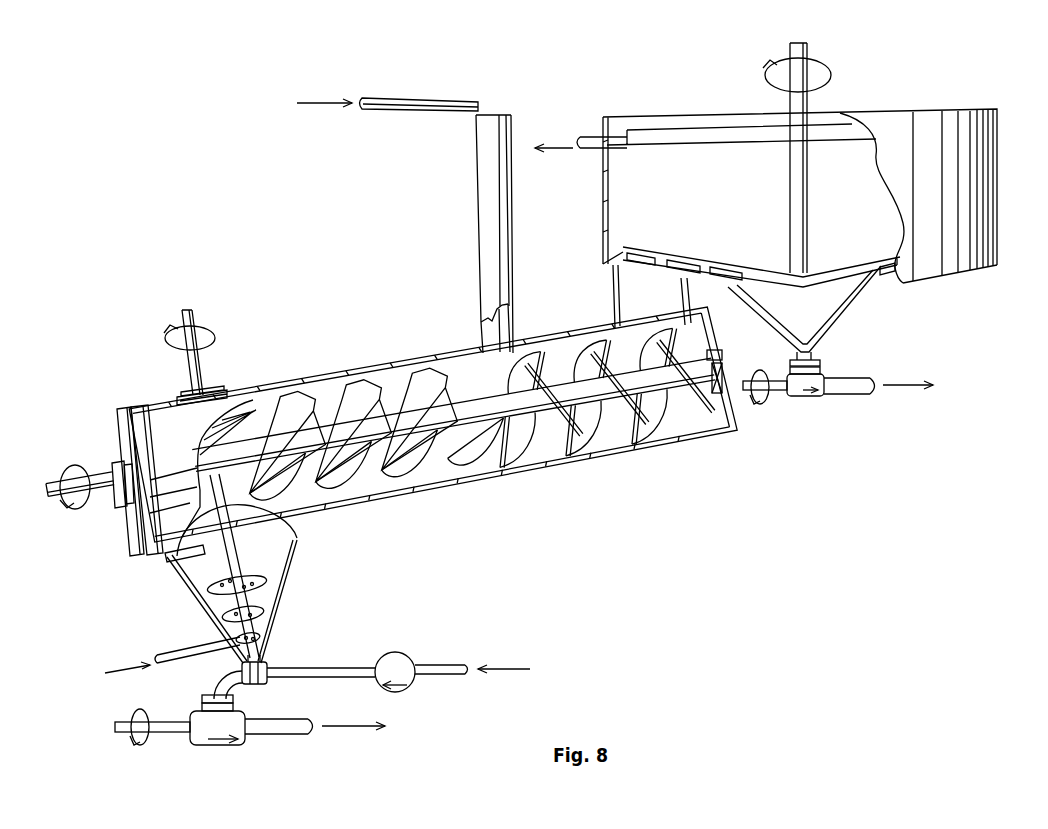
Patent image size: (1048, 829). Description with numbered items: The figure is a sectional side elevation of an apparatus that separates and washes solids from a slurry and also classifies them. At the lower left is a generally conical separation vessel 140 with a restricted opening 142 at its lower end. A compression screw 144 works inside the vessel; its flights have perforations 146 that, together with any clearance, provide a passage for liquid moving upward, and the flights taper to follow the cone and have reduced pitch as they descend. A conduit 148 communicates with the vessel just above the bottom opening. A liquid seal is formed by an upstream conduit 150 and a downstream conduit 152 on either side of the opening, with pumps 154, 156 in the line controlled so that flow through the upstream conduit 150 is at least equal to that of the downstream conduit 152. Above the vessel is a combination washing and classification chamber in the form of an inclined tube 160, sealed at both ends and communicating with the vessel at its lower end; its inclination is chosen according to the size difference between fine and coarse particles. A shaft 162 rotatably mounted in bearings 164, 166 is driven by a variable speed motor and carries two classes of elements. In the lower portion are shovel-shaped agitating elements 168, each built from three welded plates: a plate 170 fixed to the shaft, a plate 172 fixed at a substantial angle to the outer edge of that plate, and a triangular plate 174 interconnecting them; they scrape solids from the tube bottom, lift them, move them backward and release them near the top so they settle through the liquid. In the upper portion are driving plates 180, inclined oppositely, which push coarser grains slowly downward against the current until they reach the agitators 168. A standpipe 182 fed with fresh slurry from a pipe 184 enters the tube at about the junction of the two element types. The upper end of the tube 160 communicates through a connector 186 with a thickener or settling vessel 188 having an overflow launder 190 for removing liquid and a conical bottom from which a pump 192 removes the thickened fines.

The separation vessel 140 is at (276, 603).
The restricted opening 142 is at (266, 666).
The compression screw 144 is at (236, 533).
The perforations 146 is at (205, 583).
The conduit 148 is at (214, 644).
The upstream conduit 150 is at (296, 679).
The downstream conduit 152 is at (216, 687).
The pump 154 is at (411, 656).
The pump 156 is at (227, 739).
The inclined tube 160 is at (318, 386).
The shaft 162 is at (98, 475).
The bearing 164 is at (133, 509).
The bearing 166 is at (713, 356).
The shovel-shaped agitating elements 168 is at (288, 393).
The plate 170 is at (430, 478).
The plate 172 is at (460, 374).
The triangular plate 174 is at (363, 400).
The driving plates 180 is at (600, 334).
The standpipe 182 is at (476, 224).
The pipe 184 is at (412, 100).
The connector 186 is at (612, 276).
The thickener or settling vessel 188 is at (603, 214).
The overflow launder 190 is at (614, 133).
The pump 192 is at (822, 375).